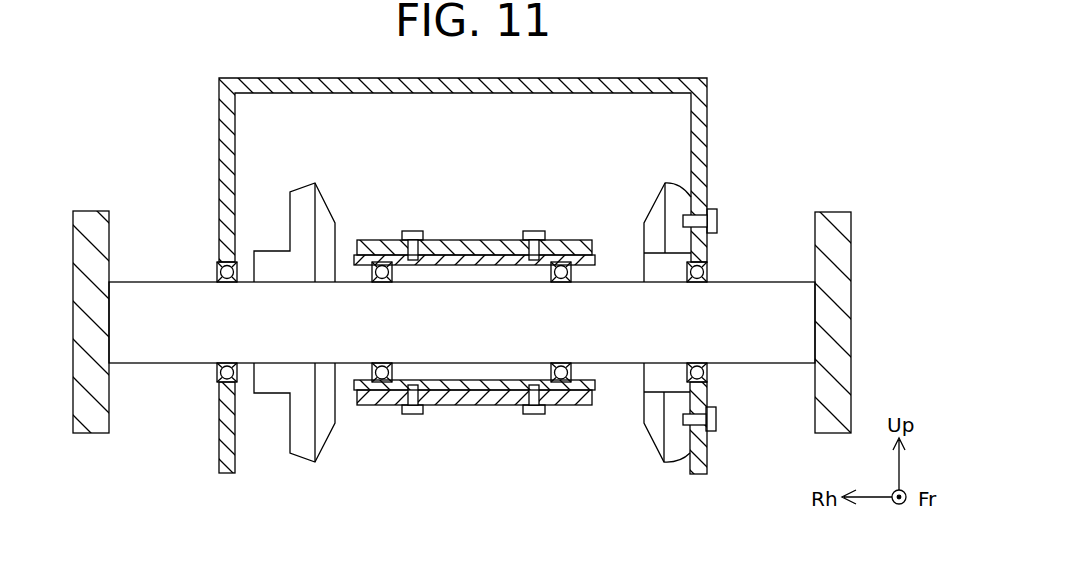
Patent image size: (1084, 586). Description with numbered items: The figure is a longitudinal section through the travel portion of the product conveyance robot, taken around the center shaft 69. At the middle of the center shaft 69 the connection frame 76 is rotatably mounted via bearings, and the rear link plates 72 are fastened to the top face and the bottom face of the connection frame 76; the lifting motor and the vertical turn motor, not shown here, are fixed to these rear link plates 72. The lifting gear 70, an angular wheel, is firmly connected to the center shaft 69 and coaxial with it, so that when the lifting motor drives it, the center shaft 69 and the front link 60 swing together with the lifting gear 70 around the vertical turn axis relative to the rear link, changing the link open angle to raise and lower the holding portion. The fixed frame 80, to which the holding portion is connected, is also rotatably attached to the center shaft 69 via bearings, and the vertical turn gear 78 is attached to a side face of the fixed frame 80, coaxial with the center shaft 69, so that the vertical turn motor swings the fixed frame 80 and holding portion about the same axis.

The front link 60 is at (90, 210).
The center shaft 69 is at (743, 288).
The lifting gear 70 is at (300, 448).
The rear link plates 72 is at (449, 240).
The connection frame 76 is at (478, 405).
The vertical turn gear 78 is at (653, 213).
The fixed frame 80 is at (623, 78).